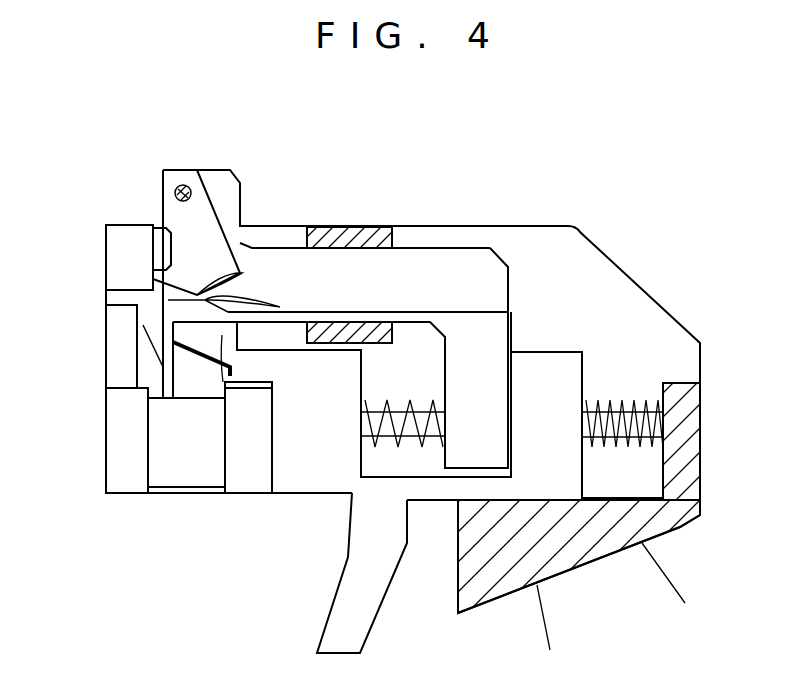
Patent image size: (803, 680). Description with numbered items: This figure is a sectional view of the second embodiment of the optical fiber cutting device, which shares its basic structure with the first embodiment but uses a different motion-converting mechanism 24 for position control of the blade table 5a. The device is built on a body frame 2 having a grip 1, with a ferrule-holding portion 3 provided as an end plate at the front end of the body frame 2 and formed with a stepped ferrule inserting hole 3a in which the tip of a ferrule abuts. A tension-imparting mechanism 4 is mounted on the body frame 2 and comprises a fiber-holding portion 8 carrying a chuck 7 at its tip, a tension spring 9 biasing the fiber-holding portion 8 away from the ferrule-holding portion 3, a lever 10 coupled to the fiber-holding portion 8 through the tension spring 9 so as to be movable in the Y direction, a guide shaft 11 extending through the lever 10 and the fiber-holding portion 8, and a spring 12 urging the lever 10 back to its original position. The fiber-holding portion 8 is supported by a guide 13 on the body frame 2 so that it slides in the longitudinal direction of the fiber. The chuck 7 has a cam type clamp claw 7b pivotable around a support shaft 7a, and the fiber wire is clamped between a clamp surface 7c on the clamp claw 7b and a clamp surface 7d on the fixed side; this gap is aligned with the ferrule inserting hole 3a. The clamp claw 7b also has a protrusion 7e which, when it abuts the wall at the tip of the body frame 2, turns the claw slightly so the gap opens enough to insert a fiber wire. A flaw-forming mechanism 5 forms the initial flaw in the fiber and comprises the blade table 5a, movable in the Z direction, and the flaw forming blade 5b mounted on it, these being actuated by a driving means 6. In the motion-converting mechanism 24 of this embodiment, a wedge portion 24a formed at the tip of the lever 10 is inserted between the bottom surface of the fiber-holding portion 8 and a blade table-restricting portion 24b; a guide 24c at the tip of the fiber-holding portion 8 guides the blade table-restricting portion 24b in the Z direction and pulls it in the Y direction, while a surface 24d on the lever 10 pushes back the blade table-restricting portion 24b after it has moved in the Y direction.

The grip 1 is at (560, 620).
The body frame 2 is at (607, 280).
The ferrule-holding portion 3 is at (91, 306).
The ferrule inserting hole 3a is at (113, 298).
The tension-imparting mechanism 4 is at (278, 233).
The flaw-forming mechanism 5 is at (128, 415).
The blade table 5a is at (157, 423).
The flaw forming blade 5b is at (163, 360).
The driving means 6 is at (232, 479).
The chuck 7 is at (175, 253).
The support shaft 7a is at (178, 195).
The clamp claw 7b is at (177, 217).
The clamp surface 7c is at (244, 273).
The clamp surface 7d is at (240, 300).
The protrusion 7e is at (157, 278).
The fiber-holding portion 8 is at (452, 268).
The tension spring 9 is at (367, 403).
The lever 10 is at (338, 605).
The guide shaft 11 is at (653, 427).
The spring 12 is at (595, 403).
The guide 13 is at (360, 240).
The motion-converting mechanism 24 is at (232, 440).
The wedge portion 24a is at (205, 380).
The blade table-restricting portion 24b is at (222, 340).
The guide 24c is at (173, 400).
The surface 24d is at (232, 370).